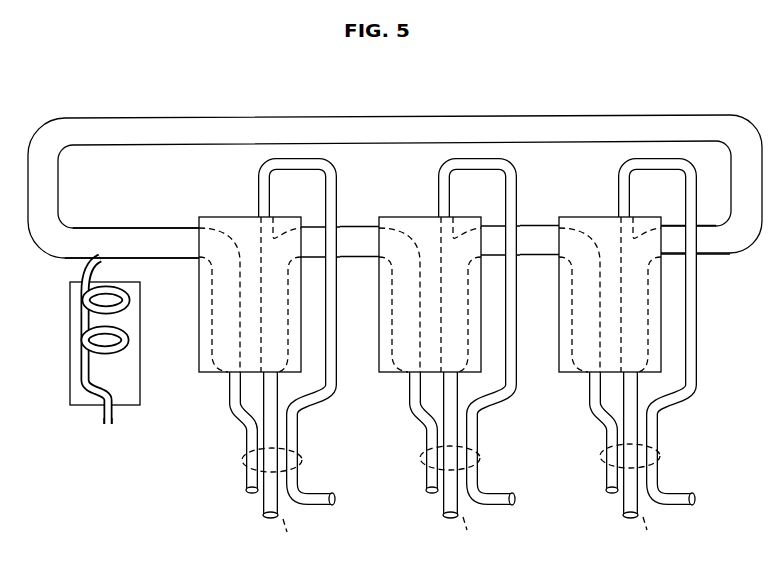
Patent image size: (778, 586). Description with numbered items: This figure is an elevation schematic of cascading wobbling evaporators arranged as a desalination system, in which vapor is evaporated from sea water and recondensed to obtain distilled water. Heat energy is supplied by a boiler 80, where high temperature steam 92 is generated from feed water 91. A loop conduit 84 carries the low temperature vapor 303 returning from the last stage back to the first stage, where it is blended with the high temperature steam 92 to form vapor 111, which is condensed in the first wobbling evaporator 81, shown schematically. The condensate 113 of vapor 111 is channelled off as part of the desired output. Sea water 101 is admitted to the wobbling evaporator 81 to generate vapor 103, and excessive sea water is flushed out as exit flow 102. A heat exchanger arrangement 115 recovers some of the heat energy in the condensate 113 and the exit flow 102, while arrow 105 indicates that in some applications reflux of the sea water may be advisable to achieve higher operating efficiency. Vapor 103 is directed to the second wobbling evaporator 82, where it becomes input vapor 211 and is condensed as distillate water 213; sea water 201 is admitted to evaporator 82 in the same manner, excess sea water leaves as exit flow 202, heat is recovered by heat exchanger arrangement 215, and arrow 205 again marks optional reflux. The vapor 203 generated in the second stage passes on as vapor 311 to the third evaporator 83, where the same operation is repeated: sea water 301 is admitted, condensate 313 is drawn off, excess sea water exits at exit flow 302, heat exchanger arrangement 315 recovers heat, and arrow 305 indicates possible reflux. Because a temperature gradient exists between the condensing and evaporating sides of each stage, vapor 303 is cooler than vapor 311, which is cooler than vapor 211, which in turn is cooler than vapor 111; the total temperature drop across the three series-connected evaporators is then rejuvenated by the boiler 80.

The recirculation loop conduit 84 is at (395, 176).
The boiler 80 is at (75, 388).
The feed water 91 is at (110, 430).
The high temperature steam 92 is at (105, 341).
The wobbling evaporator 81 is at (205, 374).
The second wobbling evaporator 82 is at (421, 308).
The evaporator 83 is at (600, 307).
The low temperature vapor 303 is at (92, 253).
The vapor 111 is at (180, 253).
The vapor 103 is at (334, 252).
The input vapor 211 is at (380, 252).
The vapor 203 is at (519, 250).
The vapor 311 is at (560, 250).
The sea water 101 is at (342, 497).
The condensate 113 is at (254, 498).
The exit flow 102 is at (272, 523).
The arrow 105 is at (292, 514).
The heat exchanger arrangement 115 is at (241, 461).
The sea water 201 is at (503, 338).
The distillate water 213 is at (418, 449).
The exit flow 202 is at (452, 475).
The arrow 205 is at (492, 530).
The heat exchanger arrangement 215 is at (425, 461).
The sea water 301 is at (688, 338).
The condensate 313 is at (598, 449).
The exit flow 302 is at (632, 474).
The arrow 305 is at (672, 530).
The heat exchanger arrangement 315 is at (606, 460).